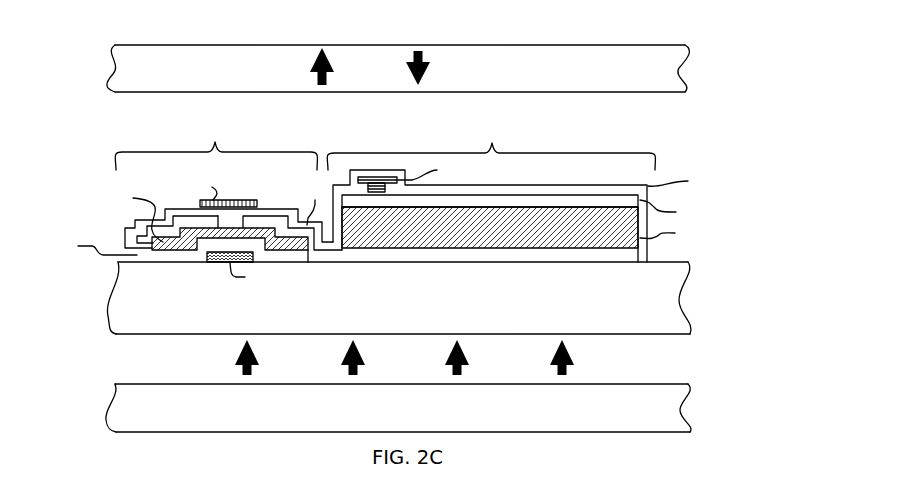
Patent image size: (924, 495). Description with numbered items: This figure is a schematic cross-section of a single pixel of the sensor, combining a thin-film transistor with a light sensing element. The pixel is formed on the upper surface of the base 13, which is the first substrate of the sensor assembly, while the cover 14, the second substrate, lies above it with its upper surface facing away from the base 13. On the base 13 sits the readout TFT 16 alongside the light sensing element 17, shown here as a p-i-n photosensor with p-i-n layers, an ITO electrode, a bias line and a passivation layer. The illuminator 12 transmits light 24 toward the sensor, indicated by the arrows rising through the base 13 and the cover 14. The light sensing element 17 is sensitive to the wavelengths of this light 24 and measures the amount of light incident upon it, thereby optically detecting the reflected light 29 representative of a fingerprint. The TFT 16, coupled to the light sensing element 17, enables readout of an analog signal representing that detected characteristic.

The illuminator 12 is at (691, 388).
The first substrate or base 13 is at (691, 267).
The second substrate or cover 14 is at (690, 53).
The TFT 16 is at (215, 142).
The sensing element 17 is at (492, 143).
The light 24 is at (315, 58).
The reflected light 29 is at (430, 70).